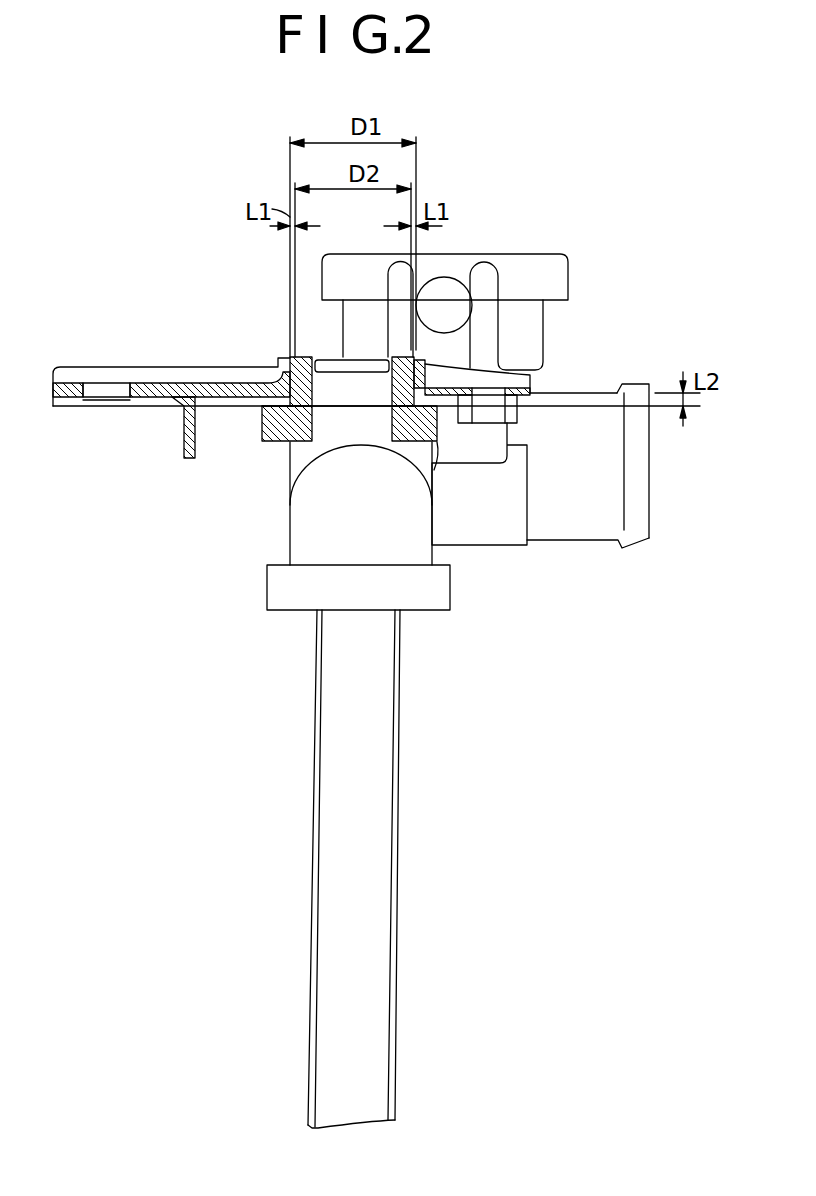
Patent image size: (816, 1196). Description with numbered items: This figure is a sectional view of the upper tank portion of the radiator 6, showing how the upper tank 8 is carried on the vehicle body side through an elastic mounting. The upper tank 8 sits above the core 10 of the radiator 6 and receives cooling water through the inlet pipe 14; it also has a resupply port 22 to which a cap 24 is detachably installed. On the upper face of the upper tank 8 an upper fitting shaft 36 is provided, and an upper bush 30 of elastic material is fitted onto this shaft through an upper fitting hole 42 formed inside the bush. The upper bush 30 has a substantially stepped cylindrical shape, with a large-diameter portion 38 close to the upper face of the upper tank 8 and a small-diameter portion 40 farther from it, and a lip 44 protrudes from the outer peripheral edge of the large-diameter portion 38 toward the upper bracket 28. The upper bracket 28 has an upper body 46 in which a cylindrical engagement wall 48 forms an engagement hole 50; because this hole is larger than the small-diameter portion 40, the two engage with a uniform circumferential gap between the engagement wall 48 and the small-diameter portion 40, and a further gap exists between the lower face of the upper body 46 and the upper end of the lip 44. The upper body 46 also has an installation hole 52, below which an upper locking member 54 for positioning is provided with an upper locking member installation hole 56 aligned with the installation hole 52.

The radiator 6 is at (640, 225).
The upper tank 8 is at (417, 548).
The core 10 is at (388, 860).
The inlet pipe 14 is at (587, 531).
The resupply port 22 is at (471, 287).
The cap 24 is at (541, 272).
The upper bracket 28 is at (87, 366).
The upper bush 30 is at (441, 456).
The upper fitting shaft 36 is at (340, 447).
The large-diameter portion 38 is at (272, 445).
The small-diameter portion 40 is at (303, 357).
The upper fitting hole 42 is at (387, 393).
The lip 44 is at (258, 407).
The upper body 46 is at (223, 367).
The engagement wall on the upper bracket side 48 is at (423, 366).
The engagement hole on the upper bracket side 50 is at (537, 380).
The installation hole on the upper bracket side 52 is at (107, 386).
The upper locking member 54 is at (182, 438).
The upper locking member installation hole 56 is at (99, 403).